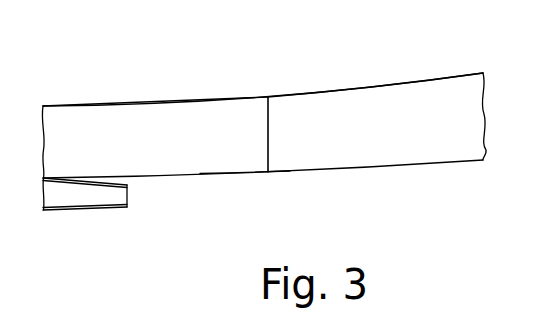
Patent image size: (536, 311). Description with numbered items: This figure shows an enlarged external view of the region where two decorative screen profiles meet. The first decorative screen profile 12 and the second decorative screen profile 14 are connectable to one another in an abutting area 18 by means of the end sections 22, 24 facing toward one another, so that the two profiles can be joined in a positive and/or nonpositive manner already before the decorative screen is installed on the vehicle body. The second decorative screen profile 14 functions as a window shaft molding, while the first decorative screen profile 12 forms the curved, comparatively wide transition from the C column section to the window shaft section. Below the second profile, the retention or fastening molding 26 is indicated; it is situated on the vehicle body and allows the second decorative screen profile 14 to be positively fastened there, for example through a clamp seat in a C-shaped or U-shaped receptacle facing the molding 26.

The first decorative screen profile 12 is at (453, 88).
The second decorative screen profile 14 is at (105, 118).
The abutting area 18 is at (245, 179).
The end section 22 is at (370, 104).
The end section 24 is at (222, 112).
The retention or fastening molding 26 is at (65, 198).